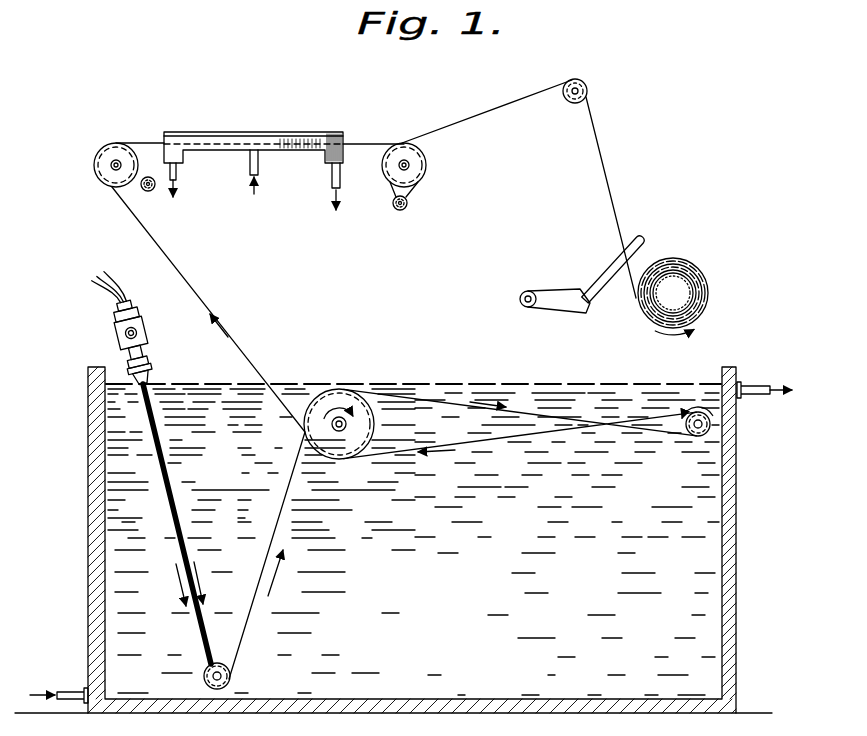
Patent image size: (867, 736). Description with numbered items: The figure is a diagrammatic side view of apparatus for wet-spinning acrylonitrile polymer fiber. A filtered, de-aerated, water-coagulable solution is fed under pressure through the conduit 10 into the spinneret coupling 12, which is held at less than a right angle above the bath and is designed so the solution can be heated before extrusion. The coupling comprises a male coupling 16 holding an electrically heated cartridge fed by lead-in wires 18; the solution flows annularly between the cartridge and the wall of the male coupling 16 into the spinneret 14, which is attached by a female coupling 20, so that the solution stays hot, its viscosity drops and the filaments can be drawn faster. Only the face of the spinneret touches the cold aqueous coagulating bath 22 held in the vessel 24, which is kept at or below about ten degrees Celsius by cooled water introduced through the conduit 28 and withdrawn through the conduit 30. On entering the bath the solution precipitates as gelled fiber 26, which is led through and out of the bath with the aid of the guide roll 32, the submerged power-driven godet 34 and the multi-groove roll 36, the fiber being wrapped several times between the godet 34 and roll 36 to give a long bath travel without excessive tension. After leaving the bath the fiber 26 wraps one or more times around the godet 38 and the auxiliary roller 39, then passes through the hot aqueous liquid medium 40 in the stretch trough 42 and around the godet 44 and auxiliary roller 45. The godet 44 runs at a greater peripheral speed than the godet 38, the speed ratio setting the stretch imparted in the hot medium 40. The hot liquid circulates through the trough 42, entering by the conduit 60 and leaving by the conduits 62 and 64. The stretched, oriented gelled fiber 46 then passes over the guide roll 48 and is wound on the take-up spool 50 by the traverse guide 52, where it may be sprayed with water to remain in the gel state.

The conduit 10 is at (103, 336).
The spinneret coupling 12 is at (76, 317).
The spinneret 14 is at (151, 393).
The male coupling 16 is at (153, 331).
The lead-in wires 18 is at (107, 282).
The female coupling 20 is at (164, 351).
The aqueous coagulating bath 22 is at (536, 392).
The vessel 24 is at (86, 531).
The fiber 26 is at (216, 325).
The conduit 28 is at (76, 690).
The conduit 30 is at (749, 396).
The guide roll 32 is at (231, 676).
The power-driven godet 34 is at (344, 390).
The multi-groove roll 36 is at (692, 436).
The godet 38 is at (108, 160).
The auxiliary roller 39 is at (154, 192).
The hot aqueous liquid medium 40 is at (262, 142).
The stretch trough 42 is at (206, 130).
The godet 44 is at (424, 176).
The auxiliary roller 45 is at (405, 208).
The stretched gelled fiber 46 is at (494, 118).
The guide roll 48 is at (587, 88).
The take-up spool 50 is at (702, 262).
The traverse guide 52 is at (608, 262).
The conduit 60 is at (260, 164).
The conduit 62 is at (178, 176).
The conduit 64 is at (330, 184).